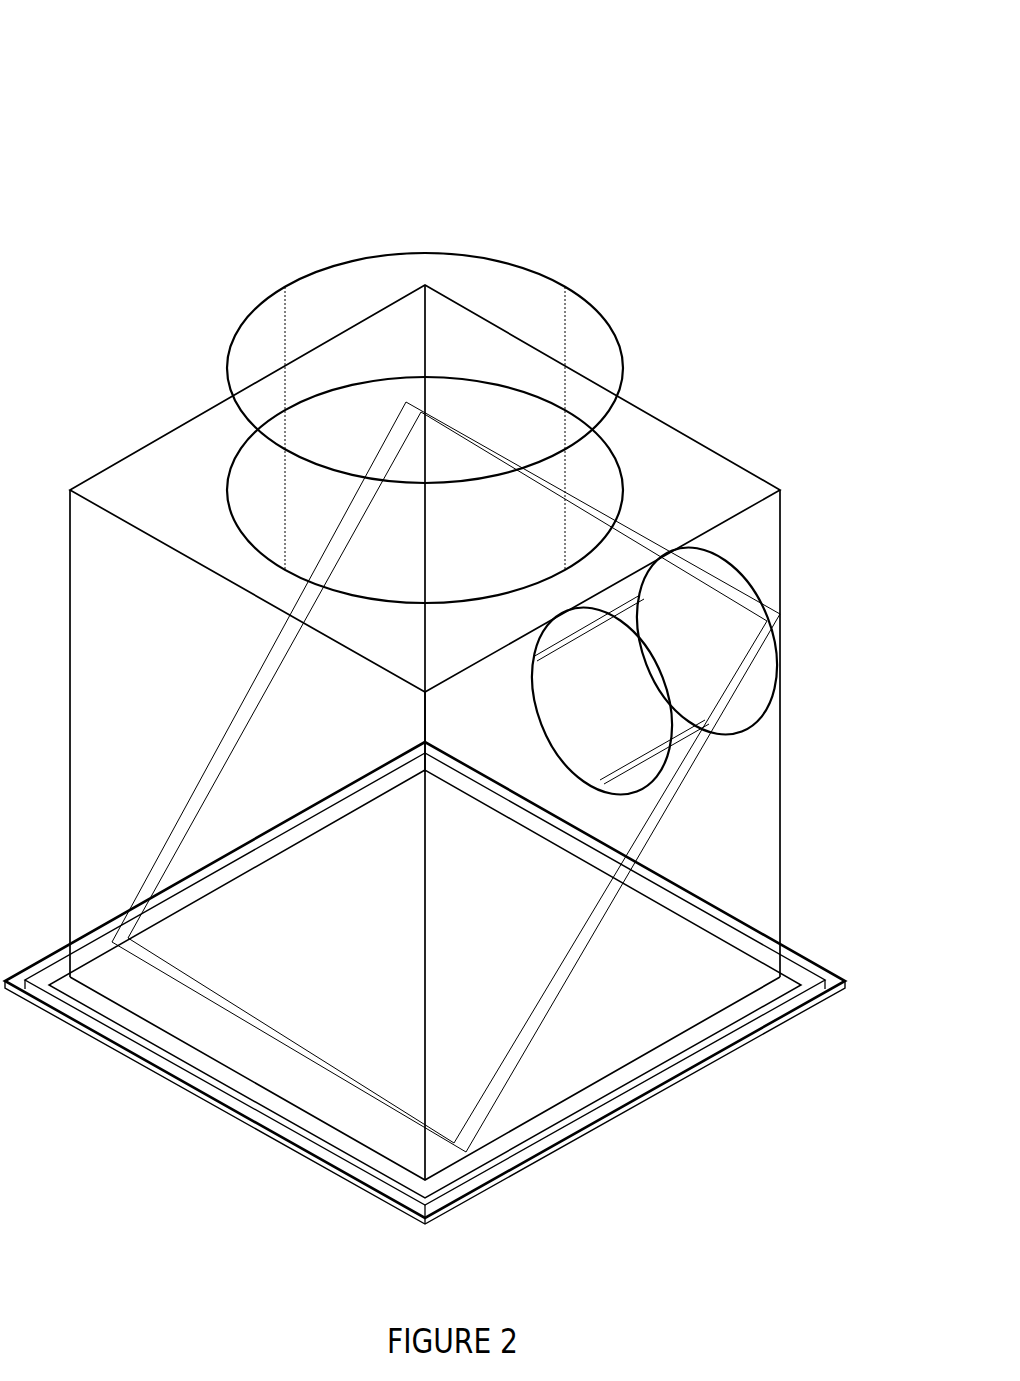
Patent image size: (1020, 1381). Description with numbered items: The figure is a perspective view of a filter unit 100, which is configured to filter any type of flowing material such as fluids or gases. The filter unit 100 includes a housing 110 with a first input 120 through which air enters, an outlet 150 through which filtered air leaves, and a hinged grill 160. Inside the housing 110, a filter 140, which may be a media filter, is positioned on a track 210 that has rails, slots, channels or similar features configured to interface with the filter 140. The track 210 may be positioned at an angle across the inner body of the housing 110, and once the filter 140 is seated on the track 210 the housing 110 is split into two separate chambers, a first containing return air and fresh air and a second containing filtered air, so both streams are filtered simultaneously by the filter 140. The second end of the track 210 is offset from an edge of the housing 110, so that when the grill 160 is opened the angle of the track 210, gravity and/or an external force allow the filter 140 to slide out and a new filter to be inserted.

The filter unit 100 is at (125, 108).
The housing 110 is at (781, 545).
The first input 120 is at (779, 720).
The filter 140 is at (475, 1015).
The outlet 150 is at (570, 284).
The hinged grill 160 is at (628, 1002).
The track 210 is at (813, 958).